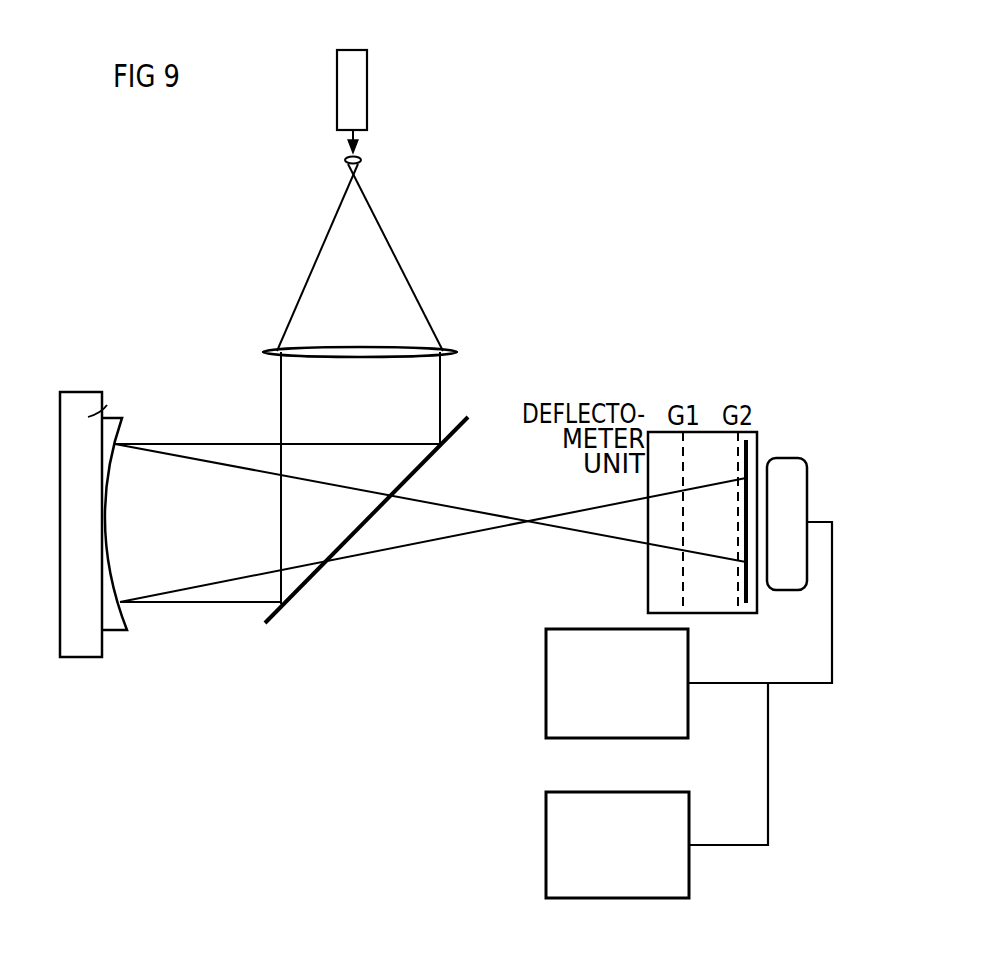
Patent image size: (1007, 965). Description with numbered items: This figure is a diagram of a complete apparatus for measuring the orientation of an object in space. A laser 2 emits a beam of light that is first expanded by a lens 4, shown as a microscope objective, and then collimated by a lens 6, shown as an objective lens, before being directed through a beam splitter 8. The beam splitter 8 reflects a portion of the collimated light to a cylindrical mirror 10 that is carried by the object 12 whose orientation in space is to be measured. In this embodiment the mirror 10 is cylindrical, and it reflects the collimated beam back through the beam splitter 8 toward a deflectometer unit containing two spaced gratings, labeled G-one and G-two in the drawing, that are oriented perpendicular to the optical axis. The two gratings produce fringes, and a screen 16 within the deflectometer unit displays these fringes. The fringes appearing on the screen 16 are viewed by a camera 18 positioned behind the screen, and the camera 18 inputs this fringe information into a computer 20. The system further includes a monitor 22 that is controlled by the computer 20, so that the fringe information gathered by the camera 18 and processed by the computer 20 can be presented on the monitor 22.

The laser 2 is at (358, 55).
The lens 4 is at (345, 160).
The lens 6 is at (272, 350).
The beam splitter 8 is at (313, 580).
The cylindrical mirror 10 is at (118, 632).
The object 12 is at (70, 391).
The screen 16 is at (748, 603).
The camera 18 is at (783, 458).
The computer 20 is at (632, 882).
The monitor 22 is at (632, 721).